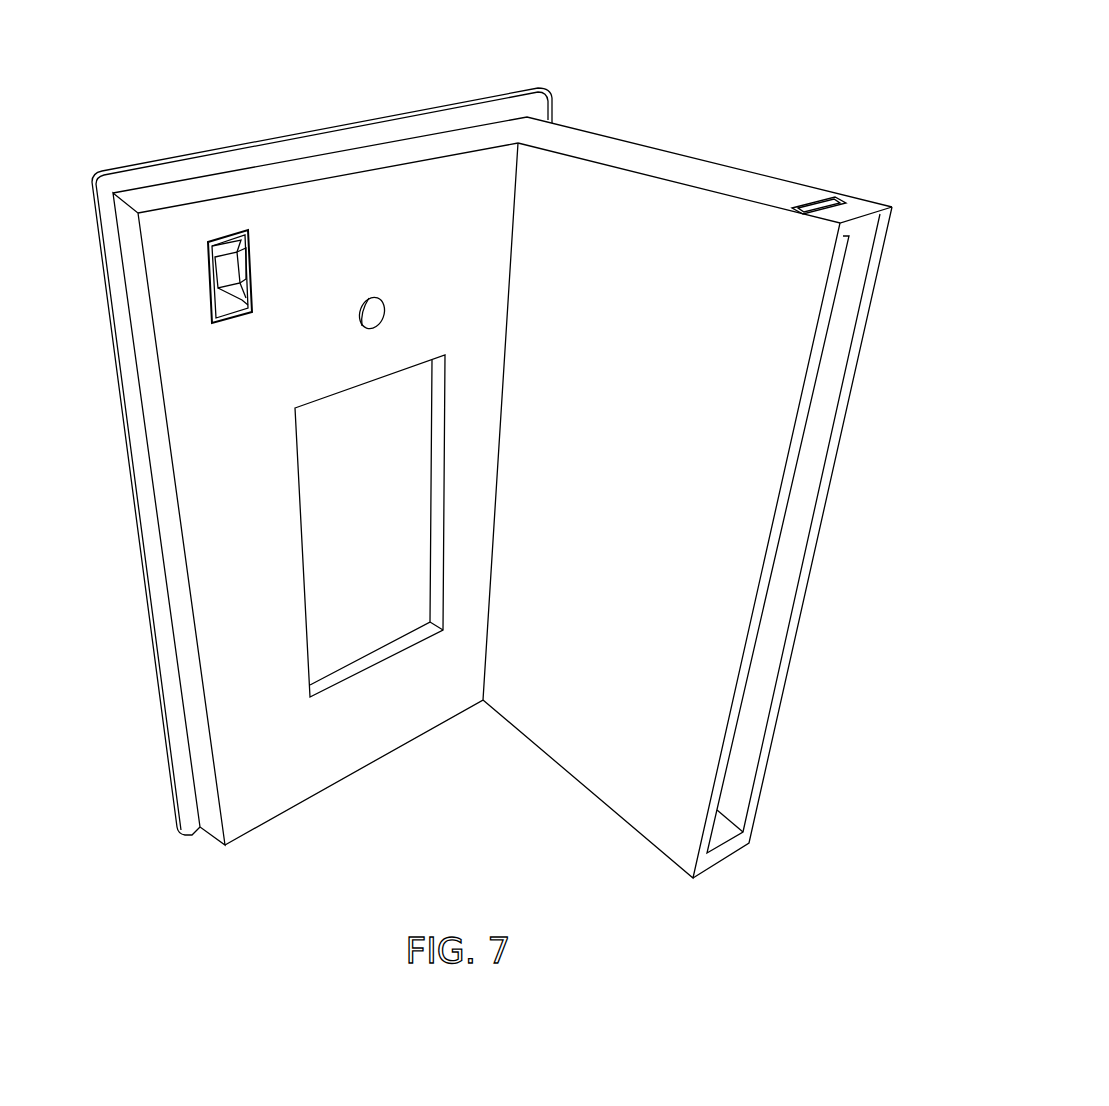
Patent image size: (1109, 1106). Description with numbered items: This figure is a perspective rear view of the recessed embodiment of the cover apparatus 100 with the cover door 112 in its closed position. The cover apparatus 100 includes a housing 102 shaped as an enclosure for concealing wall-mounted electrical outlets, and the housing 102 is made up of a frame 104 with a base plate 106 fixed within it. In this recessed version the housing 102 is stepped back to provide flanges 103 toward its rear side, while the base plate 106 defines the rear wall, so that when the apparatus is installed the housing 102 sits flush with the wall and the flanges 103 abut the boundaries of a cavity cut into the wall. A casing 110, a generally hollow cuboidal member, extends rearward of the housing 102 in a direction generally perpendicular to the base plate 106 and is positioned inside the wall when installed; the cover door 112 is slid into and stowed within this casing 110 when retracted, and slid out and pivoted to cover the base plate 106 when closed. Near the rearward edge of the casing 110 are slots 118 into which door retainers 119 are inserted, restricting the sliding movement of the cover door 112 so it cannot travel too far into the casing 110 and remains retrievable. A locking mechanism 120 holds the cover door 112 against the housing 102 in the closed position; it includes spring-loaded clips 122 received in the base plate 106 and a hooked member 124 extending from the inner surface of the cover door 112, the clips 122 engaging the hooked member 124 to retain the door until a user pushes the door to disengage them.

The cover apparatus 100 is at (684, 47).
The housing 102 is at (112, 415).
The flanges 103 is at (180, 170).
The frame 104 is at (300, 172).
The base plate 106 is at (236, 628).
The casing 110 is at (702, 172).
The cover door 112 is at (348, 615).
The slots 118 is at (865, 213).
The door retainers 119 is at (828, 200).
The locking mechanism 120 is at (190, 258).
The spring-loaded clips 122 is at (238, 231).
The hooked member 124 is at (210, 278).